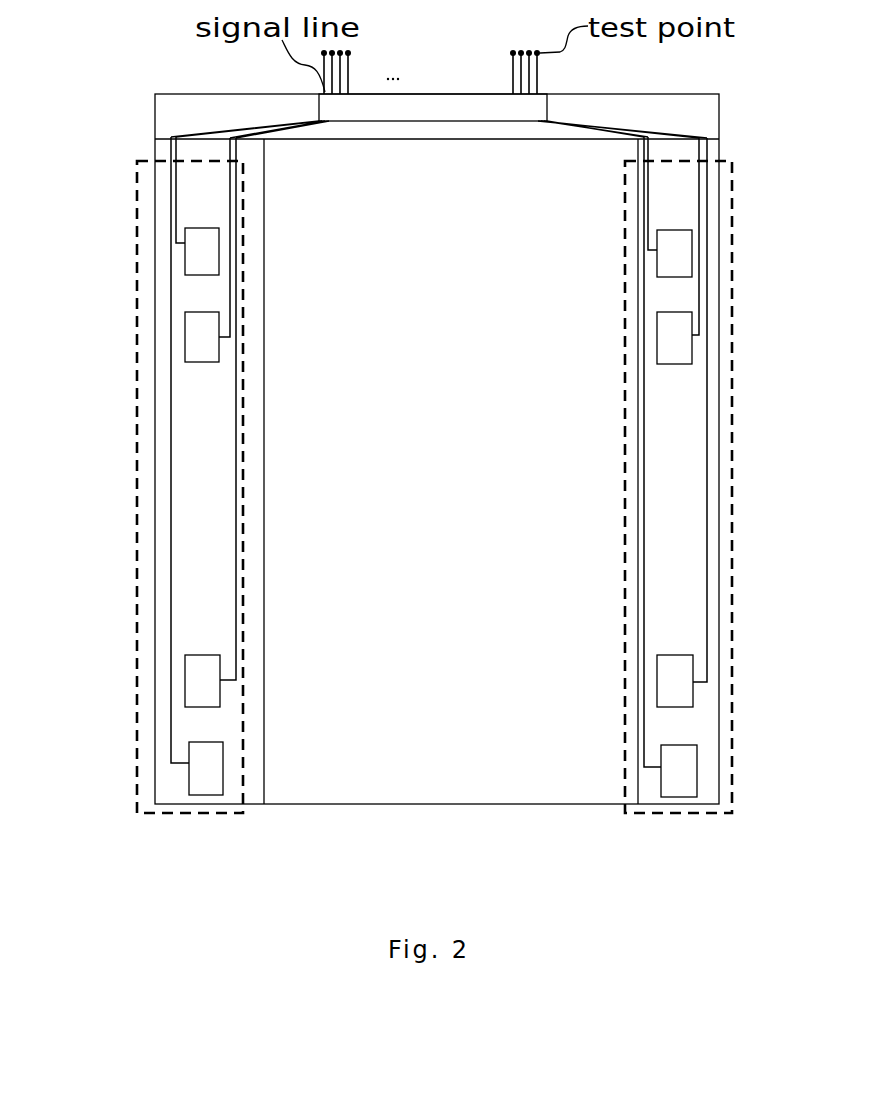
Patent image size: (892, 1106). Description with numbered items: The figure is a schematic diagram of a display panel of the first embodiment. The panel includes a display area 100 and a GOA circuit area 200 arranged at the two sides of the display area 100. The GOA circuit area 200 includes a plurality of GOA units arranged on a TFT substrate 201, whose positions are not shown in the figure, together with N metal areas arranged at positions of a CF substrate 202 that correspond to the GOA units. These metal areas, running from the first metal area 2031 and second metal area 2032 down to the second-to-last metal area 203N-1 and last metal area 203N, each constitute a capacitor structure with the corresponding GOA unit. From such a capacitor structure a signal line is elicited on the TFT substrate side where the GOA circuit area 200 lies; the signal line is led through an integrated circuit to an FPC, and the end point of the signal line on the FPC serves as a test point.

The display area 100 is at (448, 728).
The GOA circuit area 200 is at (140, 213).
The TFT substrate 201 is at (220, 113).
The CF substrate 202 is at (200, 448).
The first metal area 2031 is at (185, 262).
The second metal area 2032 is at (185, 337).
The (N-1)th metal area 203N-1 is at (185, 680).
The Nth metal area 203N is at (189, 781).